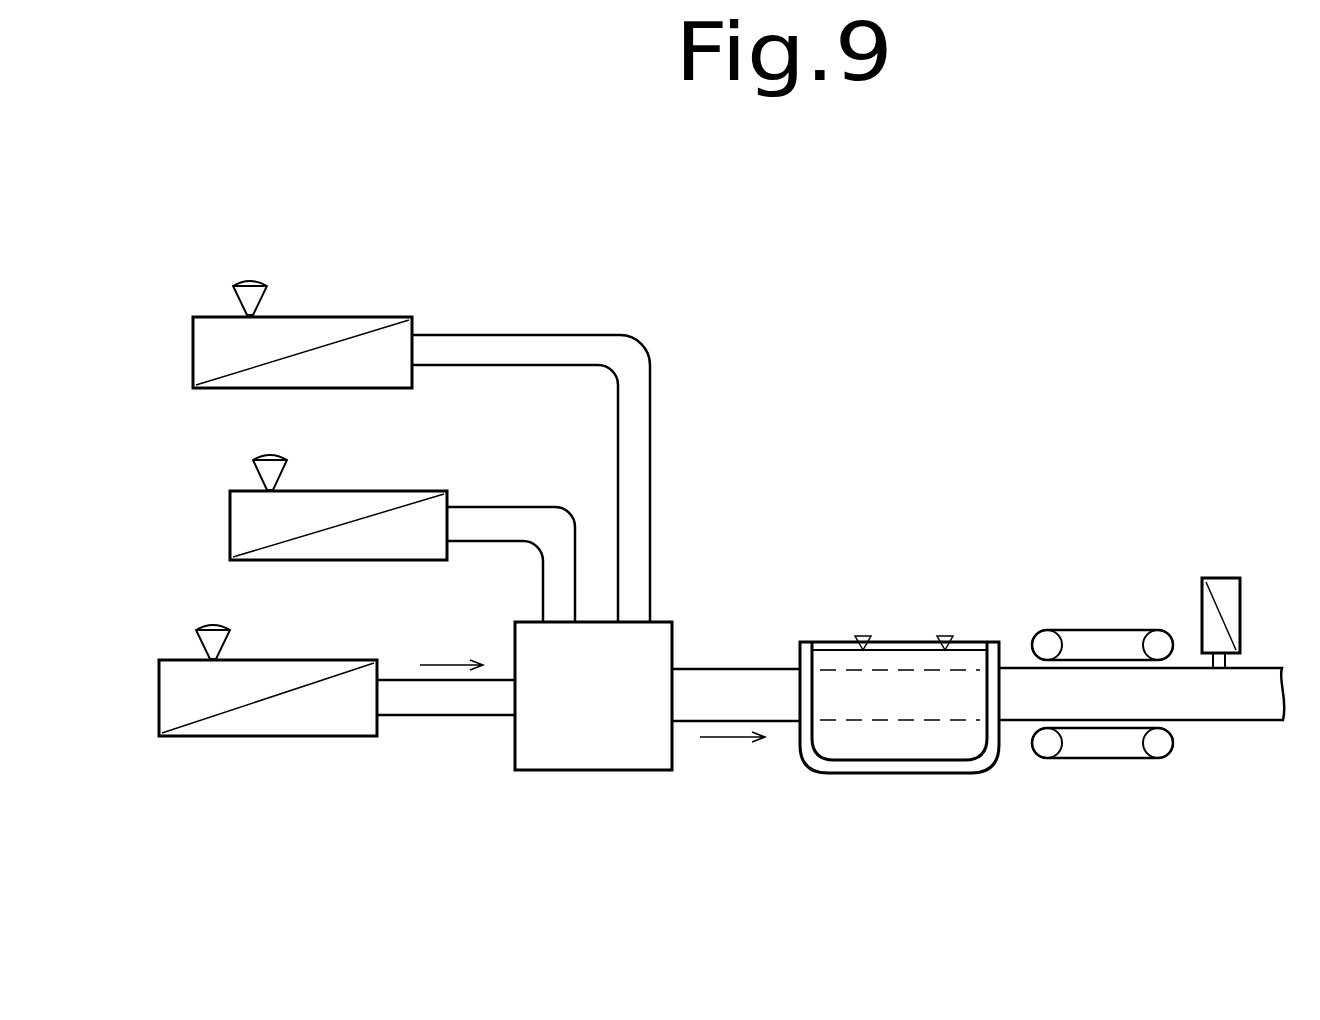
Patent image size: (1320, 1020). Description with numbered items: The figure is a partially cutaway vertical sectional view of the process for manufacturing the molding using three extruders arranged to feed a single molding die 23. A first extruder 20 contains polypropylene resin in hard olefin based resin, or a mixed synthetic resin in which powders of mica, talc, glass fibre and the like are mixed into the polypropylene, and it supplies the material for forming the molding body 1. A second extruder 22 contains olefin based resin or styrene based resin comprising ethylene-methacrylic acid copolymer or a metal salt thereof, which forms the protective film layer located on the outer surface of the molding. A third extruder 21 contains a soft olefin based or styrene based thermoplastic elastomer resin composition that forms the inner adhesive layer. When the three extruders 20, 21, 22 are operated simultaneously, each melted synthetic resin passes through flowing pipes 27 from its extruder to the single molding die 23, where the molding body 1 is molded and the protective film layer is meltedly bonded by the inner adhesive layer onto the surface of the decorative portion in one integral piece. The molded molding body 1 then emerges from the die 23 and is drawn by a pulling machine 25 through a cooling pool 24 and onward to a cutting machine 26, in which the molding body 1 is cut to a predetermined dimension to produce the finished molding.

The molding body 1 is at (730, 687).
The first extruder 20 is at (267, 718).
The third extruder 21 is at (268, 508).
The second extruder 22 is at (330, 327).
The molding die 23 is at (607, 725).
The cooling pool 24 is at (928, 752).
The pulling machine 25 is at (1095, 642).
The cutting machine 26 is at (1225, 590).
The flowing pipes 27 is at (600, 350).